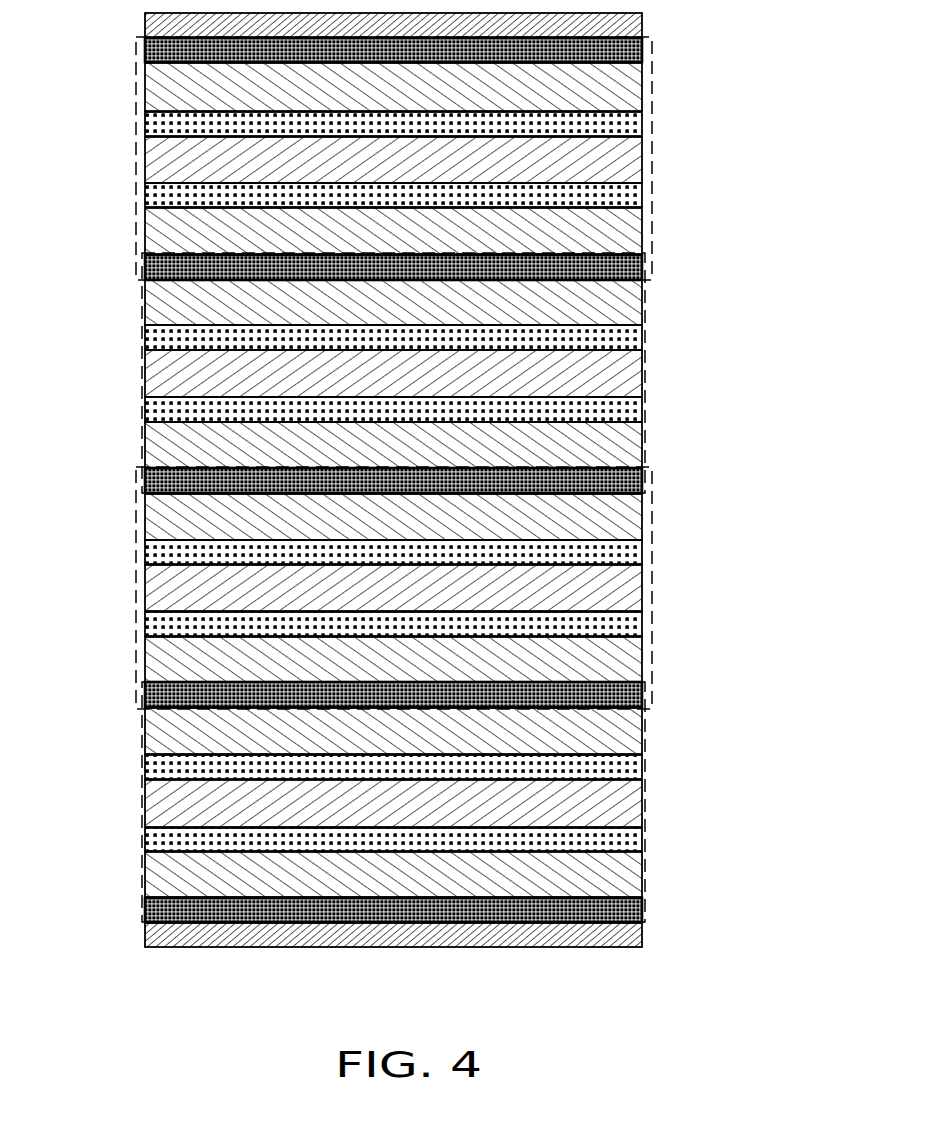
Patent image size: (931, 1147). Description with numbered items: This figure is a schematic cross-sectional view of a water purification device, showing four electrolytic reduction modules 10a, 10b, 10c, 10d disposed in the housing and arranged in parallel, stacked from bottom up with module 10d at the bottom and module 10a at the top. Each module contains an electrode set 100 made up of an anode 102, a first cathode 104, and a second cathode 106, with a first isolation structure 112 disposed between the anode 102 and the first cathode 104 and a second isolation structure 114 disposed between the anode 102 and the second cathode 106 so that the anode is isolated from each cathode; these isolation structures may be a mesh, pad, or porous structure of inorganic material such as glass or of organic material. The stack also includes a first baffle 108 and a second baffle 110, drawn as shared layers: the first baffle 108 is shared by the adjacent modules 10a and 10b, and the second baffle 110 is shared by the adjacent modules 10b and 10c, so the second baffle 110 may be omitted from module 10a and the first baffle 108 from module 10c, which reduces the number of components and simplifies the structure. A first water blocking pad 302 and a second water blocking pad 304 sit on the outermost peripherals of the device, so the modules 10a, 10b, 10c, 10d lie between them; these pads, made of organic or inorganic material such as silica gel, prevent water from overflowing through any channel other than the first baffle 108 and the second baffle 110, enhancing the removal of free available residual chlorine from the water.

The first water blocking pad 302 is at (642, 27).
The second water blocking pad 304 is at (642, 930).
The electrode set 100 is at (506, 375).
The anode 102 is at (630, 377).
The first cathode 104 is at (630, 305).
The second cathode 106 is at (473, 446).
The first baffle 108 is at (642, 268).
The second baffle 110 is at (640, 482).
The first isolation structure 112 is at (636, 337).
The second isolation structure 114 is at (636, 407).
The electrolytic reduction module 10a is at (135, 148).
The electrolytic reduction module 10b is at (450, 373).
The electrolytic reduction module 10c is at (136, 578).
The electrolytic reduction module 10d is at (142, 808).